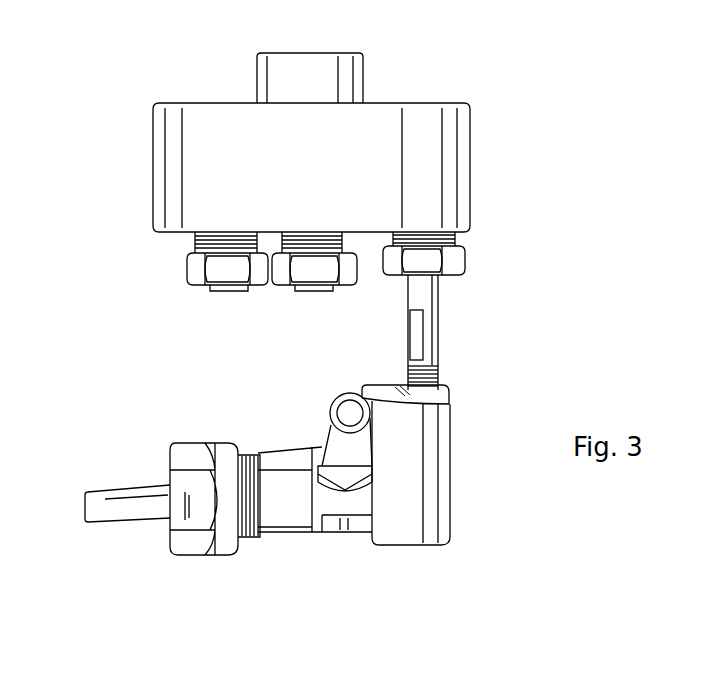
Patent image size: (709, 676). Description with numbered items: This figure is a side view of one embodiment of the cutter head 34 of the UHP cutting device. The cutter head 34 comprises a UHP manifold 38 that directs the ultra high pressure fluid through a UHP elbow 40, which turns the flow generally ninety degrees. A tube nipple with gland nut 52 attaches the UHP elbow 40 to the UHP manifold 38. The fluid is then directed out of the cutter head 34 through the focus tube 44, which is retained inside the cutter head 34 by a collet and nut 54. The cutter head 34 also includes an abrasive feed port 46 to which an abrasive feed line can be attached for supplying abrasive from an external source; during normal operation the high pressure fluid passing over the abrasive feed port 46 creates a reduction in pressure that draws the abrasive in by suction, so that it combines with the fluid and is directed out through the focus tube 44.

The cutter head 34 is at (328, 570).
The manifold 38 is at (152, 150).
The UHP elbow 40 is at (451, 517).
The focus tube 44 is at (128, 527).
The abrasive feed port 46 is at (331, 417).
The tube nipple with gland nut 52 is at (440, 302).
The collet and nut 54 is at (193, 440).